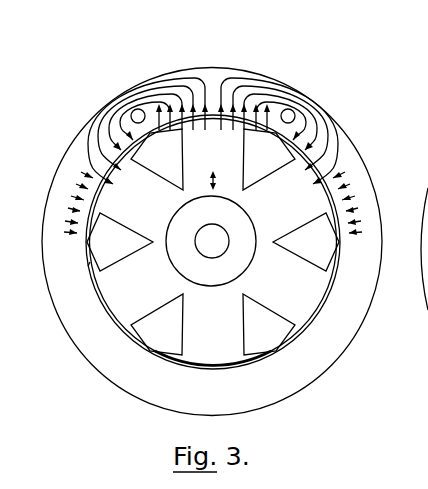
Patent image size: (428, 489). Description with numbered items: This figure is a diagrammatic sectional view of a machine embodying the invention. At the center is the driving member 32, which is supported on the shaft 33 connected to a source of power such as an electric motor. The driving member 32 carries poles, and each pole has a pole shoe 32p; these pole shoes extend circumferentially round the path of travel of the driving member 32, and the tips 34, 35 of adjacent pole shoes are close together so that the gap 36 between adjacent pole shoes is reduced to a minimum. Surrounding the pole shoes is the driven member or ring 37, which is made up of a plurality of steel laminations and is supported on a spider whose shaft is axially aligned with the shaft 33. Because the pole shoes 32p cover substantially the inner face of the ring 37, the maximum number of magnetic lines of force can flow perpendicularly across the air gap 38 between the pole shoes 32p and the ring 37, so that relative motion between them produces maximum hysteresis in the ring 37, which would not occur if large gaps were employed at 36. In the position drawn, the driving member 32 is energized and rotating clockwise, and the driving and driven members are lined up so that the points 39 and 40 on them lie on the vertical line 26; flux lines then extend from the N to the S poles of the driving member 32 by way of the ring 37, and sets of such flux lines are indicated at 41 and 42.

The vertical line 26 is at (213, 76).
The driving member 32 is at (211, 241).
The shaft 33 is at (212, 241).
The pole shoe 32p is at (112, 313).
The tip 34 is at (146, 350).
The tip 35 is at (150, 360).
The gap 36 is at (340, 244).
The driven member or ring 37 is at (359, 192).
The air gap 38 is at (88, 265).
The point 39 is at (217, 181).
The point 40 is at (217, 73).
The set of flux lines 41 is at (143, 109).
The set of flux lines 42 is at (285, 110).